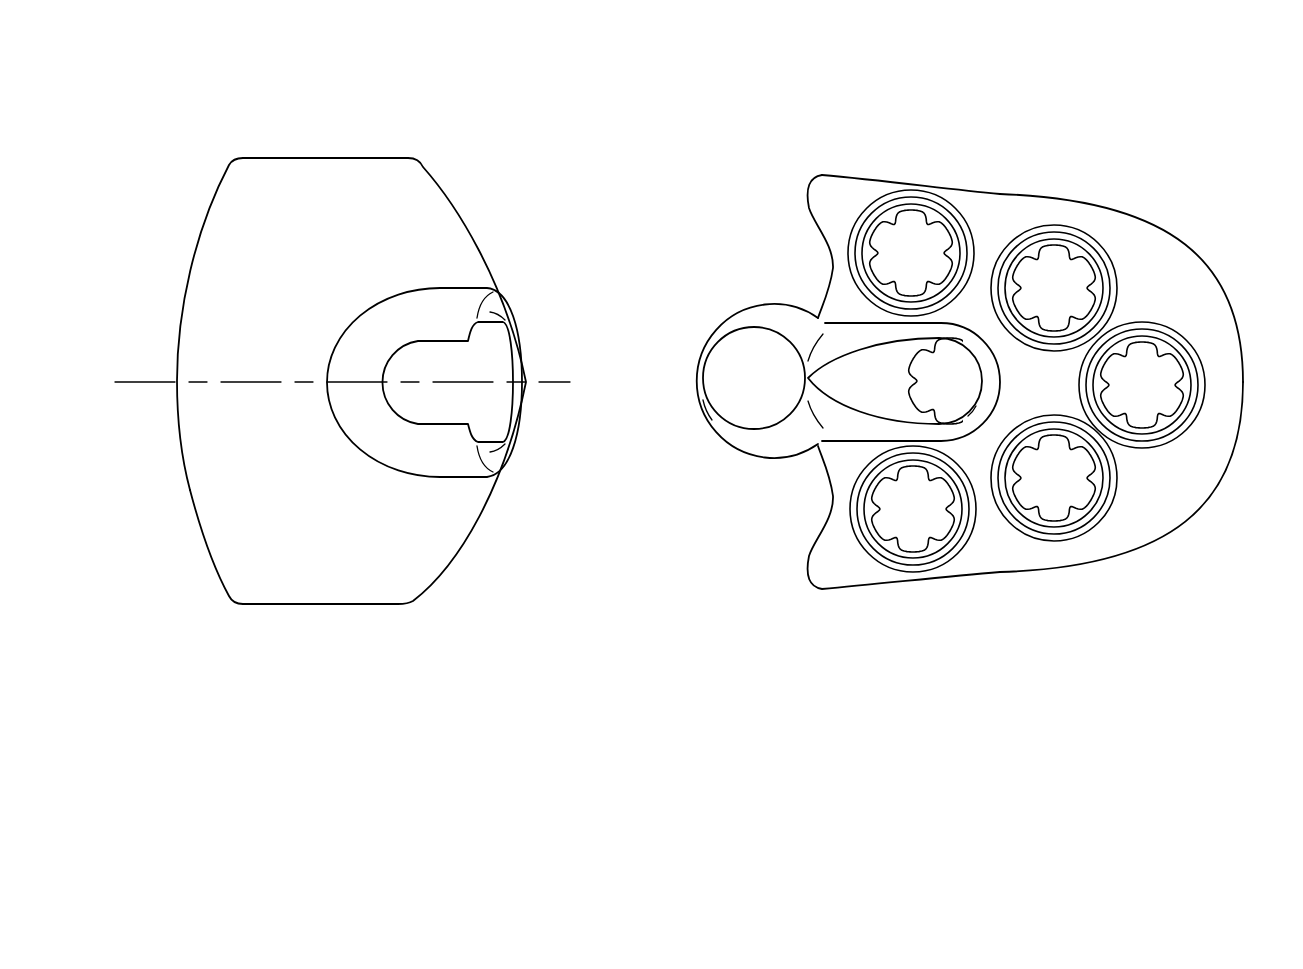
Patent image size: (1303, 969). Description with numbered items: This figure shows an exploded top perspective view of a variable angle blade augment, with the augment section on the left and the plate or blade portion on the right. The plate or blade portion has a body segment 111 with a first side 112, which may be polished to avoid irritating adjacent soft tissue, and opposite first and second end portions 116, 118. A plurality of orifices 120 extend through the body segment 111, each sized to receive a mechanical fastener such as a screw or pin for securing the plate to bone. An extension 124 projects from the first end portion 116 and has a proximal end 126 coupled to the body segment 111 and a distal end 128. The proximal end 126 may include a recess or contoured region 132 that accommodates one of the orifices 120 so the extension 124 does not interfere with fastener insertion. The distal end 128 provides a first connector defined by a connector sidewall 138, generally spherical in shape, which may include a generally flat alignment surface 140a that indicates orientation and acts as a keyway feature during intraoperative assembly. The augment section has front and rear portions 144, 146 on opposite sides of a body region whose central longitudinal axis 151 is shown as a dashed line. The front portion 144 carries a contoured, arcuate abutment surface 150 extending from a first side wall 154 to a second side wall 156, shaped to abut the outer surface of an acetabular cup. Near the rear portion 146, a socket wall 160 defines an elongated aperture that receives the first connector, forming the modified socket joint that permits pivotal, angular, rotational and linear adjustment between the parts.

The body segment 111 is at (1163, 270).
The first side 112 is at (1110, 235).
The first end portion 116 is at (812, 553).
The second end portion 118 is at (1243, 390).
The orifices 120 is at (935, 271).
The extension 124 is at (850, 380).
The proximal end 126 is at (910, 367).
The distal end 128 is at (727, 415).
The recess or contoured region 132 is at (883, 410).
The connector sidewall 138 is at (737, 361).
The alignment surface 140a is at (706, 425).
The front portion 144 is at (225, 587).
The rear portion 146 is at (469, 526).
The abutment surface 150 is at (192, 500).
The central longitudinal axis 151 is at (545, 382).
The first side wall 154 is at (292, 158).
The second side wall 156 is at (290, 605).
The socket wall 160 is at (492, 462).